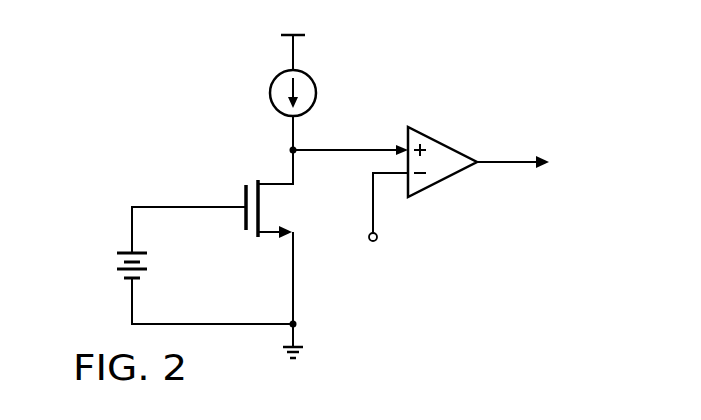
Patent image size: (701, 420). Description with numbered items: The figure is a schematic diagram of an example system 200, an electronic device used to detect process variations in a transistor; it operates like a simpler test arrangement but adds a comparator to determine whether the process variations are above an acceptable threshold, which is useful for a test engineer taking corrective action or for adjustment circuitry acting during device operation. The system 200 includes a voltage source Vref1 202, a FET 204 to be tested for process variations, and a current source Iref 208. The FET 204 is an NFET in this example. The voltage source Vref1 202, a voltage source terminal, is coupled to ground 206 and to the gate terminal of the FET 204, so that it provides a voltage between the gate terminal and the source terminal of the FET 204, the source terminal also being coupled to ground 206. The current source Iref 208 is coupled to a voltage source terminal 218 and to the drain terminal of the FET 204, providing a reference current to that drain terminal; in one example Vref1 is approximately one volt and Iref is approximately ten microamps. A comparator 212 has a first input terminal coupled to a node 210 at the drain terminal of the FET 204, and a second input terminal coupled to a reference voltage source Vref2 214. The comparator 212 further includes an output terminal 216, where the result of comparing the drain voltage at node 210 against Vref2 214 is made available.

The system 200 is at (432, 63).
The voltage source Vref1 202 is at (110, 263).
The FET 204 is at (243, 196).
The ground 206 is at (306, 350).
The current source Iref 208 is at (269, 91).
The node 210 is at (297, 156).
The comparator 212 is at (442, 141).
The reference voltage source Vref2 214 is at (379, 236).
The output terminal 216 is at (513, 166).
The voltage source terminal 218 is at (306, 38).